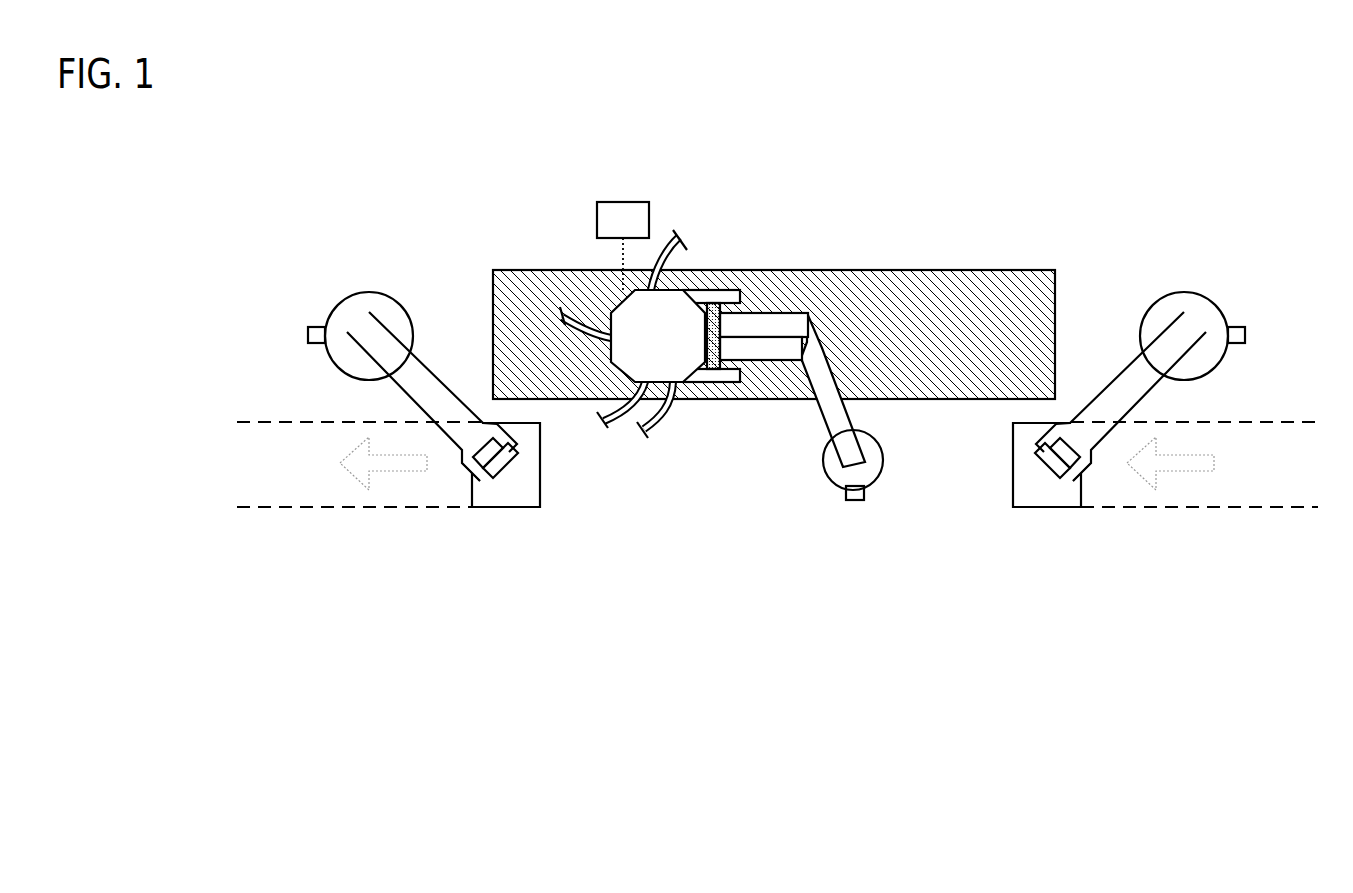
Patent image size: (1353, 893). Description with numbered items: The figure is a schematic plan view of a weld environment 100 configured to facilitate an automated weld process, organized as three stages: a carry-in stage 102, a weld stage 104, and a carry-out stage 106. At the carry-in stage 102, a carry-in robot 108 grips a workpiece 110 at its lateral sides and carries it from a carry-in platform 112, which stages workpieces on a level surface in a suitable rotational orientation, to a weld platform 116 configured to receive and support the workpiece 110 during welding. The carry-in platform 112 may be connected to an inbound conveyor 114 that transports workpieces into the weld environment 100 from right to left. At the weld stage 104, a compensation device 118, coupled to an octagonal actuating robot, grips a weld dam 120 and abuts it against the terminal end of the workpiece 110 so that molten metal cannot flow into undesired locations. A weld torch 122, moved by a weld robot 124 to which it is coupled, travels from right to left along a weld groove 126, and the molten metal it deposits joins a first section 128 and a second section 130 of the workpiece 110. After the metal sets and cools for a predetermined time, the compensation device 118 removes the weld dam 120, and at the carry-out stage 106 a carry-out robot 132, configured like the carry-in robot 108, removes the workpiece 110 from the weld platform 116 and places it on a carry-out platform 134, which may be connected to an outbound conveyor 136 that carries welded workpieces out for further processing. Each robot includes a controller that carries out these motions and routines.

The weld environment 100 is at (777, 118).
The carry-in stage 102 is at (1185, 214).
The weld stage 104 is at (914, 223).
The carry-out stage 106 is at (365, 216).
The carry-in robot 108 is at (1196, 293).
The workpiece 110 is at (778, 300).
The carry-in platform 112 is at (1012, 505).
The inbound conveyor 114 is at (1256, 506).
The weld platform 116 is at (553, 270).
The compensation device 118 is at (673, 348).
The weld dam 120 is at (714, 372).
The weld torch 122 is at (816, 404).
The weld robot 124 is at (883, 452).
The weld groove 126 is at (742, 337).
The first section 128 is at (810, 312).
The second section 130 is at (754, 370).
The carry-out robot 132 is at (353, 296).
The carry-out platform 134 is at (540, 507).
The outbound conveyor 136 is at (297, 508).